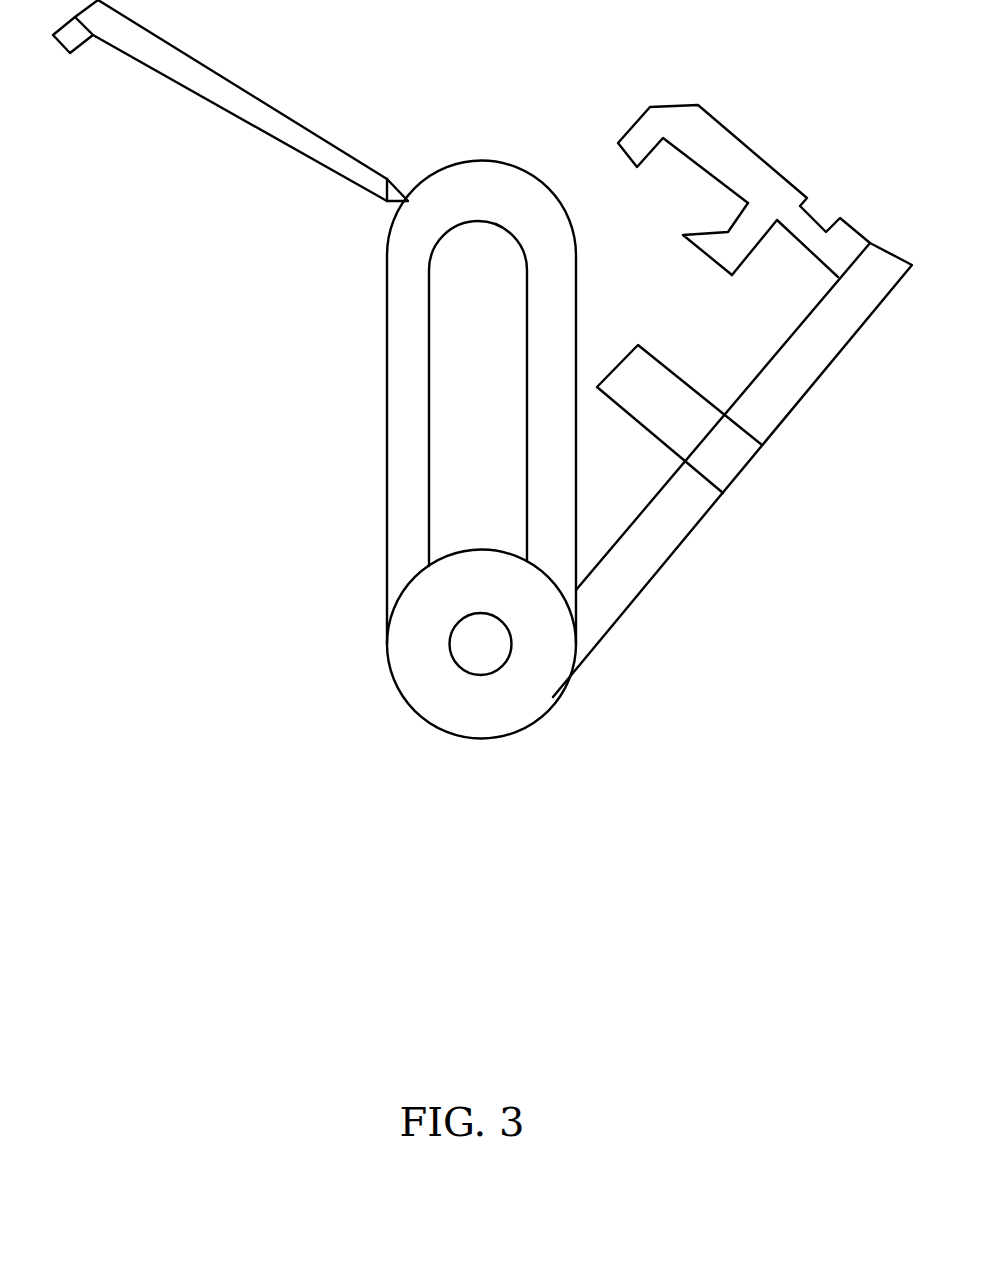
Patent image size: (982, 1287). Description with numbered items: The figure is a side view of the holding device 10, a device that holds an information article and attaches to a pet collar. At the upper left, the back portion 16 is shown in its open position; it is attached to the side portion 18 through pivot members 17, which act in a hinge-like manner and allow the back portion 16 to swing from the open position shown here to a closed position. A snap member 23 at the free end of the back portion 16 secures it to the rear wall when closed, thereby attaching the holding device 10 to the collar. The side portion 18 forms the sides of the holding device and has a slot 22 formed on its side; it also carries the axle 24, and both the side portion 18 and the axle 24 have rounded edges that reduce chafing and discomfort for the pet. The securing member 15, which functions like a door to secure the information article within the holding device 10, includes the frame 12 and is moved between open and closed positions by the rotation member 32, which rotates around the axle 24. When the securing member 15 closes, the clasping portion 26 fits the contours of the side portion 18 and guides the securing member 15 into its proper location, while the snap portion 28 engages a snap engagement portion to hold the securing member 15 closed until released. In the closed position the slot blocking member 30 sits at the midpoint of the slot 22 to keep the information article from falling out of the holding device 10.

The holding device 10 is at (245, 497).
The frame 12 is at (827, 334).
The securing member 15 is at (770, 572).
The back portion 16 is at (227, 98).
The pivot members 17 is at (395, 195).
The side portion 18 is at (485, 190).
The slot 22 is at (480, 400).
The snap member 23 is at (77, 43).
The axle 24 is at (483, 658).
The clasping portion 26 is at (742, 150).
The snap portion 28 is at (715, 255).
The slot blocking member 30 is at (652, 397).
The rotation member 32 is at (425, 628).